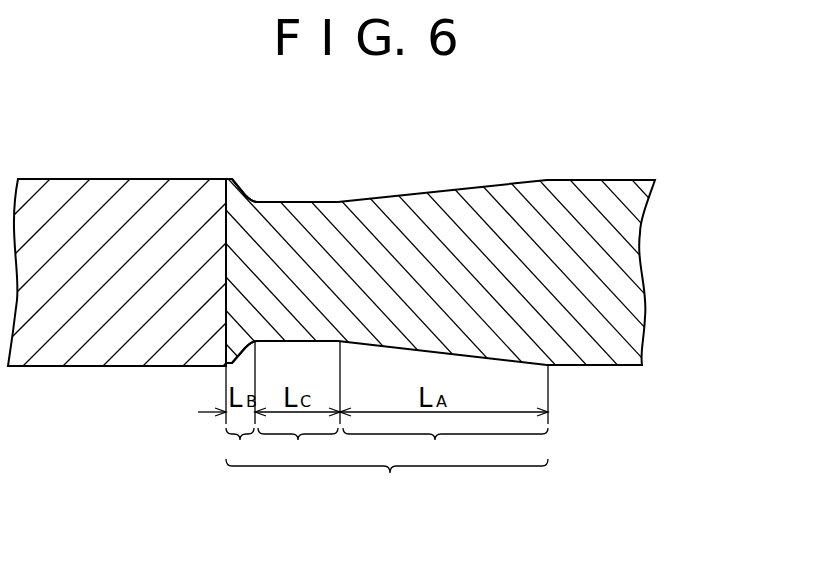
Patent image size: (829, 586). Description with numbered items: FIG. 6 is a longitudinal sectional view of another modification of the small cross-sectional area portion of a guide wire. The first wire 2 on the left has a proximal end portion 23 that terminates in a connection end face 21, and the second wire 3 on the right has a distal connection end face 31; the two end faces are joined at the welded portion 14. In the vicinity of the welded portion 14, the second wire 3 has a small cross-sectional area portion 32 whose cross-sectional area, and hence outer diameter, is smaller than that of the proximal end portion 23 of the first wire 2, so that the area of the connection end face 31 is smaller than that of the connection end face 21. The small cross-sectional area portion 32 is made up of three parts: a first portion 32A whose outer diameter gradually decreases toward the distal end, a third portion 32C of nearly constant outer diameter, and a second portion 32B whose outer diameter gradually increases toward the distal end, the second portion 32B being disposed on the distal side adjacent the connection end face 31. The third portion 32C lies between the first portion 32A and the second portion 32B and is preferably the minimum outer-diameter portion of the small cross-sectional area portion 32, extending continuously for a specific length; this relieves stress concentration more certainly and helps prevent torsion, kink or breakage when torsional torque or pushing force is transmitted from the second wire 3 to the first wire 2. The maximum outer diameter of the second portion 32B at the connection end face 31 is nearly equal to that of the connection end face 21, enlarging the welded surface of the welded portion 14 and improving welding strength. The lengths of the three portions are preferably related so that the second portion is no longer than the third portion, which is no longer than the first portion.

The first wire 2 is at (43, 348).
The second wire 3 is at (607, 348).
The welded portion 14 is at (226, 180).
The connection end face 21 is at (233, 235).
The proximal end portion 23 is at (133, 193).
The connection end face 31 is at (190, 313).
The small cross-sectional area portion 32 is at (387, 482).
The first portion 32A is at (435, 441).
The second portion 32B is at (240, 445).
The third portion 32C is at (298, 445).